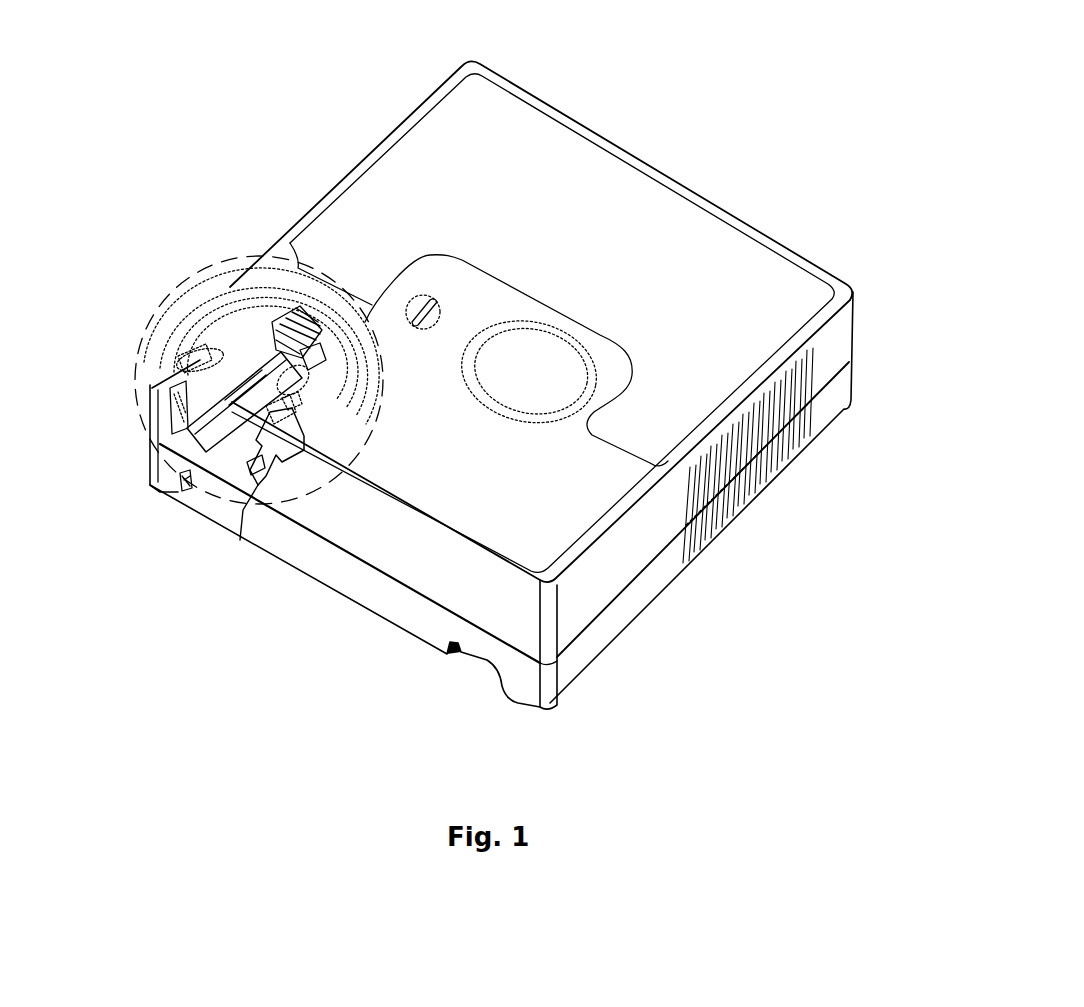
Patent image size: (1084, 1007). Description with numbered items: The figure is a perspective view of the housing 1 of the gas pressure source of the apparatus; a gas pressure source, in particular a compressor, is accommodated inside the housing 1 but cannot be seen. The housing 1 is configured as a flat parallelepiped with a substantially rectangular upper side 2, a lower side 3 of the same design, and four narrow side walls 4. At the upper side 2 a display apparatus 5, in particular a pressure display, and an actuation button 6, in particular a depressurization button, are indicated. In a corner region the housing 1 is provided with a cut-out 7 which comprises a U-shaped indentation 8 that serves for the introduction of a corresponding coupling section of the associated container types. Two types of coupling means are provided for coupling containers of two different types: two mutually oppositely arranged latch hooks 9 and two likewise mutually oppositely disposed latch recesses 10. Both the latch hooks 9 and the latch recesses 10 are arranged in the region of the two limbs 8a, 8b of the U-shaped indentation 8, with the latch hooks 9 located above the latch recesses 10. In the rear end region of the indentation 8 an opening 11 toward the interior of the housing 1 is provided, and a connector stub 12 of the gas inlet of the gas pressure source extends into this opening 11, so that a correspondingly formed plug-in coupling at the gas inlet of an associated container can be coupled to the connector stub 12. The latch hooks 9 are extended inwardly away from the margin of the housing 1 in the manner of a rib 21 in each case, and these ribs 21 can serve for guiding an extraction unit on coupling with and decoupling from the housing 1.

The housing 1 is at (706, 124).
The upper side 2 is at (578, 227).
The lower side 3 is at (641, 612).
The side walls 4 is at (346, 166).
The display apparatus 5 is at (558, 370).
The actuation button 6 is at (442, 316).
The cut-out 7 is at (438, 441).
The U-shaped indentation 8 is at (292, 388).
The limb 8a is at (198, 424).
The limb 8b is at (243, 487).
The latch hooks 9 is at (275, 416).
The latch recesses 10 is at (250, 468).
The opening 11 is at (310, 332).
The connector stub 12 is at (308, 362).
The rib 21 is at (218, 372).